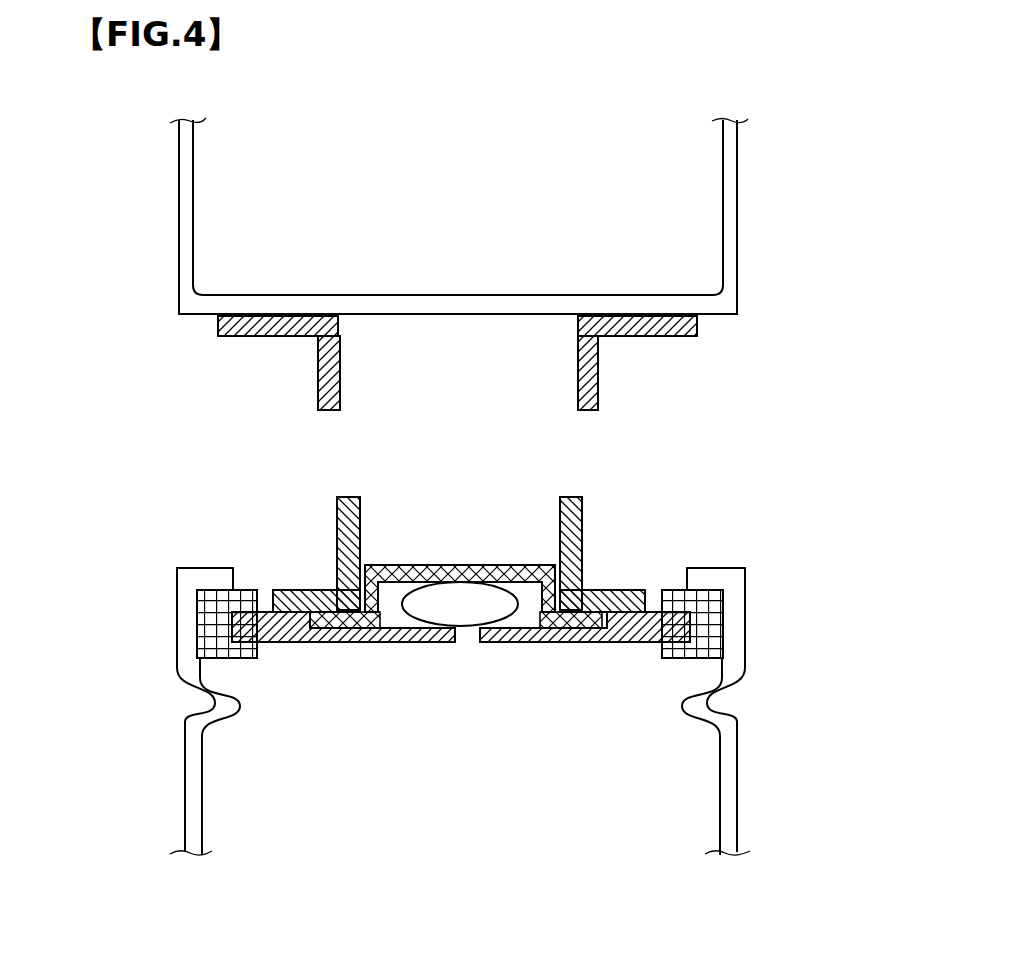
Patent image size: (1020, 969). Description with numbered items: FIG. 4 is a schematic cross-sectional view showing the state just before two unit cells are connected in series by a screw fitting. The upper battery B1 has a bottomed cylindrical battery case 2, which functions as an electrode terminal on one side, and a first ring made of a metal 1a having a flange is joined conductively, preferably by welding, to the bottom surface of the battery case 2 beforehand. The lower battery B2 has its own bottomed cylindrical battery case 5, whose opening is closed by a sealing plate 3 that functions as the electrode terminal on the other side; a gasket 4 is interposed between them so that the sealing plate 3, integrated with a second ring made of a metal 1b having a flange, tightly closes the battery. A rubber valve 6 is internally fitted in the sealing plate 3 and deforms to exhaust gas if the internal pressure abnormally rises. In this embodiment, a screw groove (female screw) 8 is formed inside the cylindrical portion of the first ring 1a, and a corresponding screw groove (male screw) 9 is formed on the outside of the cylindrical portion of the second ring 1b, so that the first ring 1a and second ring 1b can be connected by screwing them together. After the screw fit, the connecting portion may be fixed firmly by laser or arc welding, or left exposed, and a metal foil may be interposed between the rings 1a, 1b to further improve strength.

The battery B1 is at (135, 226).
The battery B2 is at (135, 726).
The bottomed cylindrical battery case 2 is at (733, 212).
The first ring made of a metal 1a is at (598, 376).
The screw groove (female screw) 8 is at (340, 378).
The screw groove (male screw) 9 is at (337, 522).
The second ring made of a metal 1b is at (583, 522).
The sealing plate 3 is at (645, 642).
The gasket 4 is at (720, 618).
The bottomed cylindrical battery case 5 is at (733, 800).
The rubber valve 6 is at (450, 612).